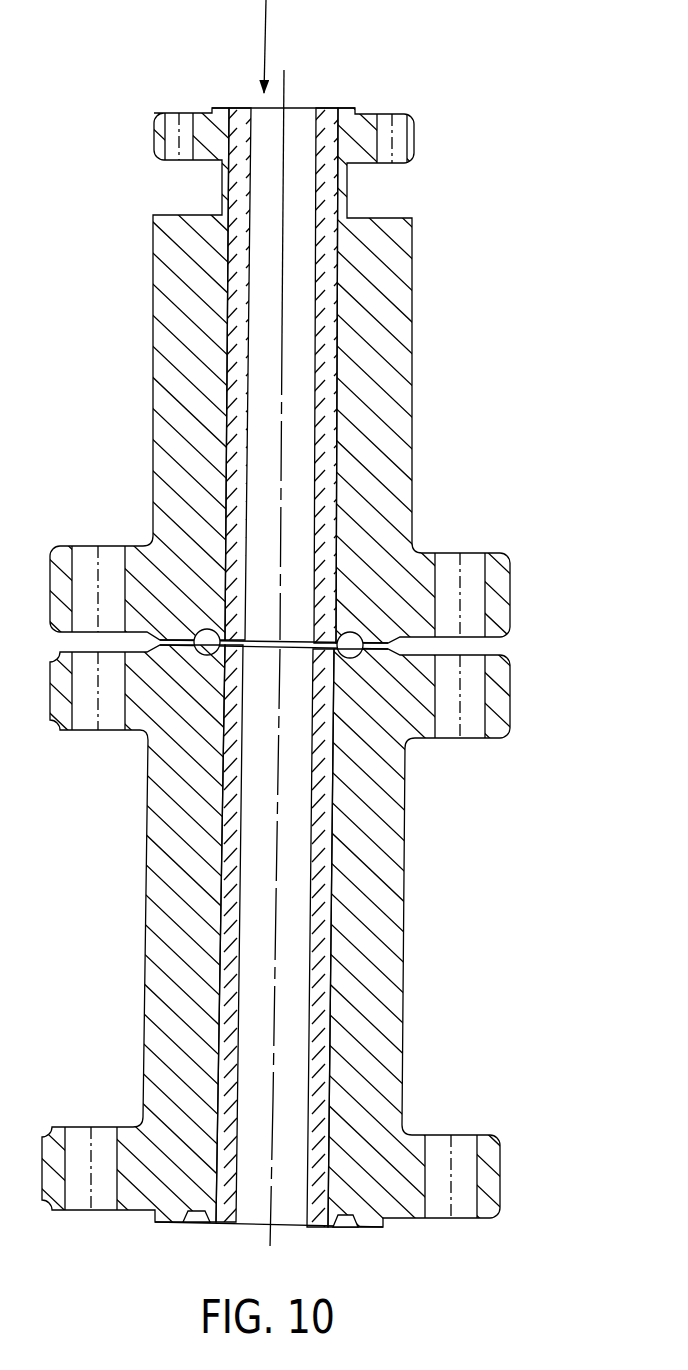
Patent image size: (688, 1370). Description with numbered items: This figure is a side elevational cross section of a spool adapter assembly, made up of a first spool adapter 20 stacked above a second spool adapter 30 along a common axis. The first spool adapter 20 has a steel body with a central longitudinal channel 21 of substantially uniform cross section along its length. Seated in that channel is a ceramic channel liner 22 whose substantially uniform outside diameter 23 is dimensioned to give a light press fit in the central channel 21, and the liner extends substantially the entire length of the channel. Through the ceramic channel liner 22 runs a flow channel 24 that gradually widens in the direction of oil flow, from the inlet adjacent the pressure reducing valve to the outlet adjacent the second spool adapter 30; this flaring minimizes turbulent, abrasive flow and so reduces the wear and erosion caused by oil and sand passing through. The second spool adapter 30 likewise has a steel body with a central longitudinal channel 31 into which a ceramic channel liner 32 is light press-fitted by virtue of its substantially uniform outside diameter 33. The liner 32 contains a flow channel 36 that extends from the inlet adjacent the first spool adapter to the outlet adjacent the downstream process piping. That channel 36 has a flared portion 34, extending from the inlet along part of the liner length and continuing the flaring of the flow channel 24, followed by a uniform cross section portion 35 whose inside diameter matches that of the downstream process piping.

The first spool adapter 20 is at (319, 518).
The central longitudinal channel 21 is at (351, 342).
The ceramic channel liner 22 is at (216, 375).
The outside diameter 23 is at (230, 428).
The flow channel 24 is at (256, 382).
The second spool adapter 30 is at (317, 777).
The central longitudinal channel 31 is at (348, 903).
The ceramic channel liner 32 is at (211, 936).
The outside diameter 33 is at (229, 913).
The flared portion 34 is at (254, 754).
The uniform cross section portion 35 is at (248, 1040).
The flow channel 36 is at (281, 848).